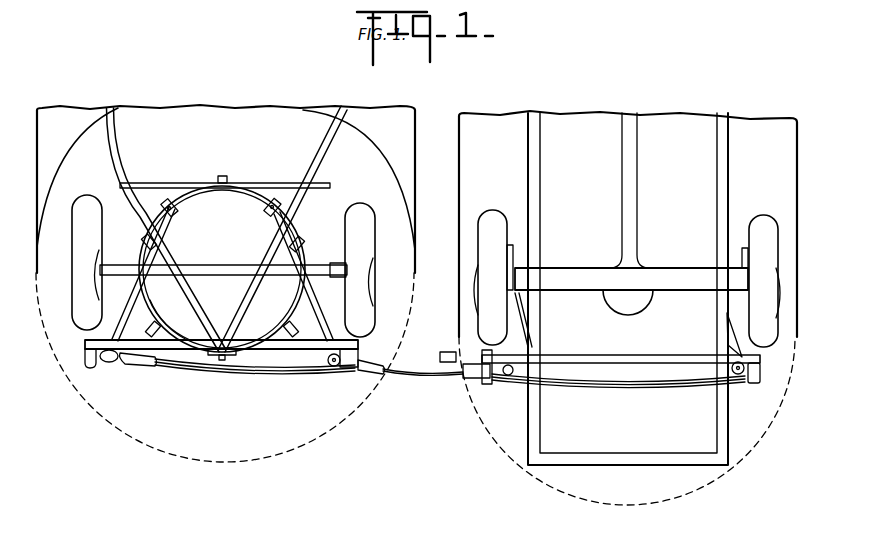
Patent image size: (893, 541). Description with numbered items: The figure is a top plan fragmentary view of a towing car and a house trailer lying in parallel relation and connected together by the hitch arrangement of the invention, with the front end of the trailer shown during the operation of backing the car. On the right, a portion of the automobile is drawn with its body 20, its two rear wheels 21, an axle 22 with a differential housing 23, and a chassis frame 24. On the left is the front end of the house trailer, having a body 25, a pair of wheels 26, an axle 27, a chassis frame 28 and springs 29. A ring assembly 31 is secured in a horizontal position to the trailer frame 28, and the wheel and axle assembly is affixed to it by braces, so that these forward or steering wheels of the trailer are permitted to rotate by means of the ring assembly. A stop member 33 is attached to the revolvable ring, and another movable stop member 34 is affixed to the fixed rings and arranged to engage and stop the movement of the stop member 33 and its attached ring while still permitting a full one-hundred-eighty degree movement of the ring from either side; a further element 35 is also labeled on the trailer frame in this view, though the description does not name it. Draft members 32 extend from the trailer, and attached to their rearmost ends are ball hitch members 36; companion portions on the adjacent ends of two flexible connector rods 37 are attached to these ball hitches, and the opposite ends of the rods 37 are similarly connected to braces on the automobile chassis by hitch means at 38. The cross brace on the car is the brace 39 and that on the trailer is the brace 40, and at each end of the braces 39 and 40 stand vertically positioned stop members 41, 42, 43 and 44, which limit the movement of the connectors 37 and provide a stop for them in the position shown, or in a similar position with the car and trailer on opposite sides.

The body 20 is at (483, 120).
The rear wheels 21 is at (493, 216).
The axle 22 is at (568, 263).
The differential housing 23 is at (627, 297).
The chassis frame 24 is at (725, 165).
The body 25 is at (60, 116).
The wheels 26 is at (80, 313).
The axle 27 is at (203, 270).
The chassis frame 28 is at (115, 148).
The springs 29 is at (133, 217).
The ring assembly 31 is at (158, 322).
The draft members 32 is at (128, 297).
The stop member 33 is at (222, 358).
The movable stop member 34 is at (225, 177).
The top bar 35 is at (162, 180).
The ball hitch members 36 is at (108, 362).
The flexible connector rods 37 is at (398, 372).
The hitch means 38 is at (518, 373).
The cross brace 39 is at (650, 358).
The cross brace 40 is at (172, 351).
The stop member 41 is at (88, 377).
The stop member 42 is at (341, 360).
The stop member 43 is at (478, 372).
The stop member 44 is at (746, 381).